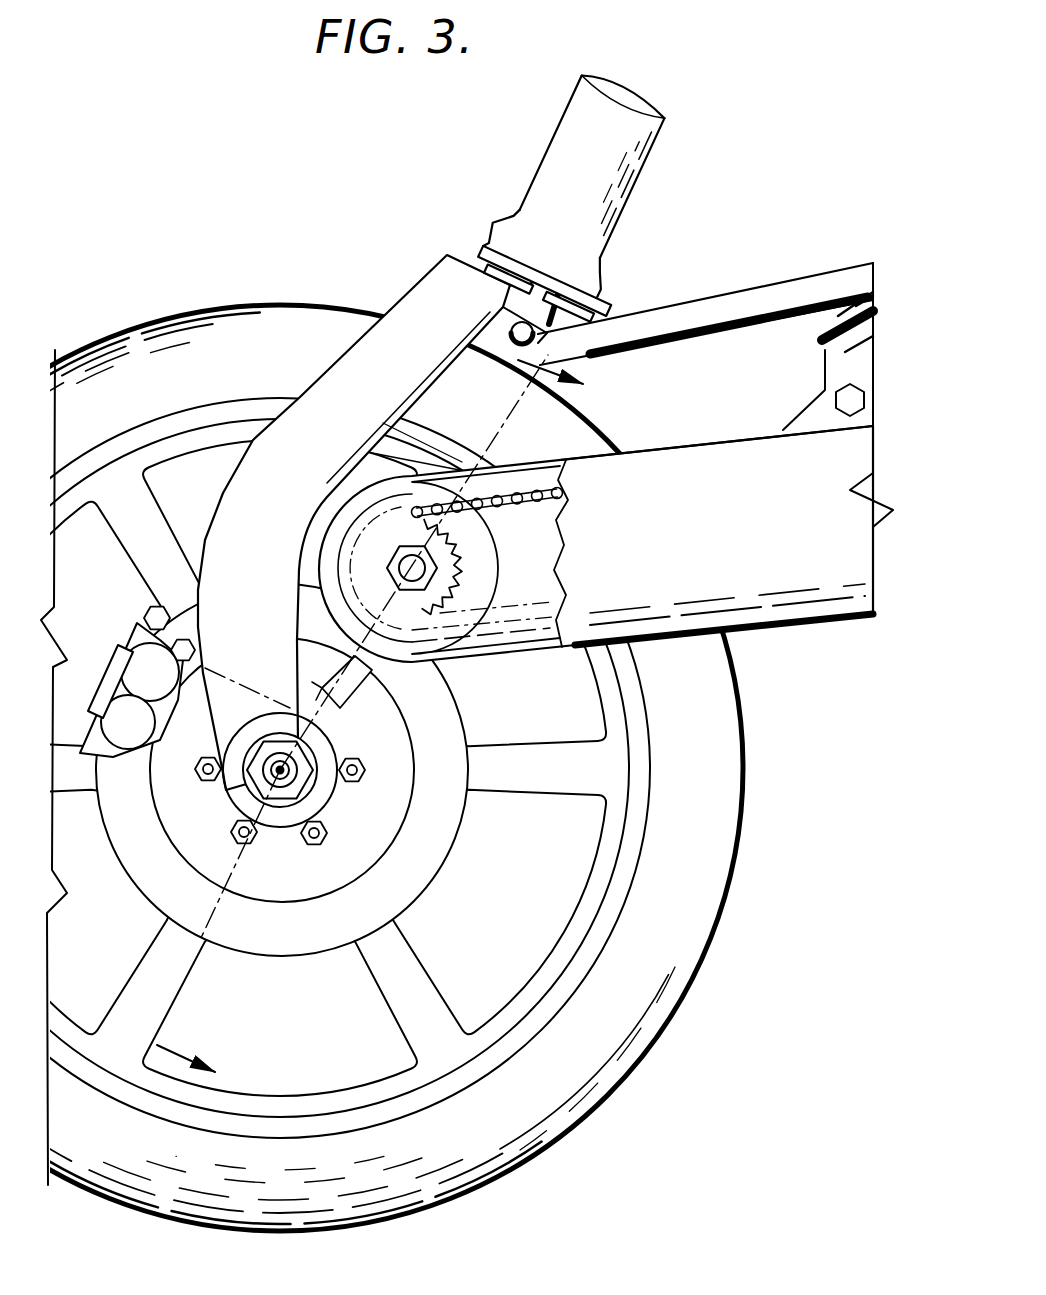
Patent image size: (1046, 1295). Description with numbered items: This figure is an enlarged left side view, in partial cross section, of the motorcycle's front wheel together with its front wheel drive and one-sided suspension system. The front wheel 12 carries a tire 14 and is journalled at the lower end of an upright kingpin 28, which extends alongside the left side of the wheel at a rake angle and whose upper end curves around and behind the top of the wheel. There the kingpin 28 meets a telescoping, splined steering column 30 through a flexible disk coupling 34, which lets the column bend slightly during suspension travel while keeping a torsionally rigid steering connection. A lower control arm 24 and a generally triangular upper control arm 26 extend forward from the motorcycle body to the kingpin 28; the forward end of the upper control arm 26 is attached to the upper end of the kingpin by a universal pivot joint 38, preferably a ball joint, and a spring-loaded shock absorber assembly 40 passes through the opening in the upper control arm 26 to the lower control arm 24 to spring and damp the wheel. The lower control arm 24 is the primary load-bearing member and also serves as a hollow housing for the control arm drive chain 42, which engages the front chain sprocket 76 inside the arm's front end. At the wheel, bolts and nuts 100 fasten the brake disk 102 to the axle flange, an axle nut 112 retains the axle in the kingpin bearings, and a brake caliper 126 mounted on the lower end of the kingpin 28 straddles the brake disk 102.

The front wheel 12 is at (520, 1010).
The tire 14 is at (670, 963).
The lower control arm 24 is at (792, 638).
The upper control arm 26 is at (722, 305).
The kingpin 28 is at (397, 322).
The steering column 30 is at (545, 140).
The flexible disk coupling 34 is at (485, 252).
The universal pivot joint 38 is at (558, 344).
The shock absorber assembly 40 is at (818, 355).
The control arm drive chain 42 is at (565, 452).
The front chain sprocket 76 is at (453, 572).
The nuts 100 is at (313, 848).
The brake disk 102 is at (440, 837).
The axle nut 112 is at (302, 783).
The brake caliper 126 is at (140, 623).